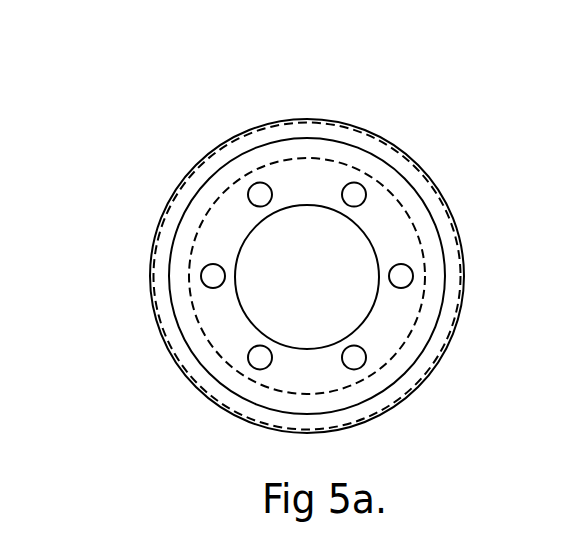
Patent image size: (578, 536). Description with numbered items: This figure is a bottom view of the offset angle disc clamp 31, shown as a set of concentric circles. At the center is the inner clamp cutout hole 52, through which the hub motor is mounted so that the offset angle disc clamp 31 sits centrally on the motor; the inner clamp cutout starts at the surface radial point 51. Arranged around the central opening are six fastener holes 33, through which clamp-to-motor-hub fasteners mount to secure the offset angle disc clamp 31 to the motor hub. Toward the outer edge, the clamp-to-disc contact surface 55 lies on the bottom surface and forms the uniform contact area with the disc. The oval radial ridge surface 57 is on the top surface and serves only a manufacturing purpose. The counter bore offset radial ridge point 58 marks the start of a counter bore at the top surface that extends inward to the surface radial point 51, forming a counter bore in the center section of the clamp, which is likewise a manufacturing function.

The offset angle disc clamp 31 is at (466, 346).
The fastener holes 33 is at (205, 288).
The surface radial point 51 is at (367, 235).
The inner clamp cutout hole 52 is at (342, 209).
The clamp-to-disc contact surface 55 is at (455, 268).
The oval radial ridge surface 57 is at (445, 223).
The counter bore offset radial ridge point 58 is at (318, 159).